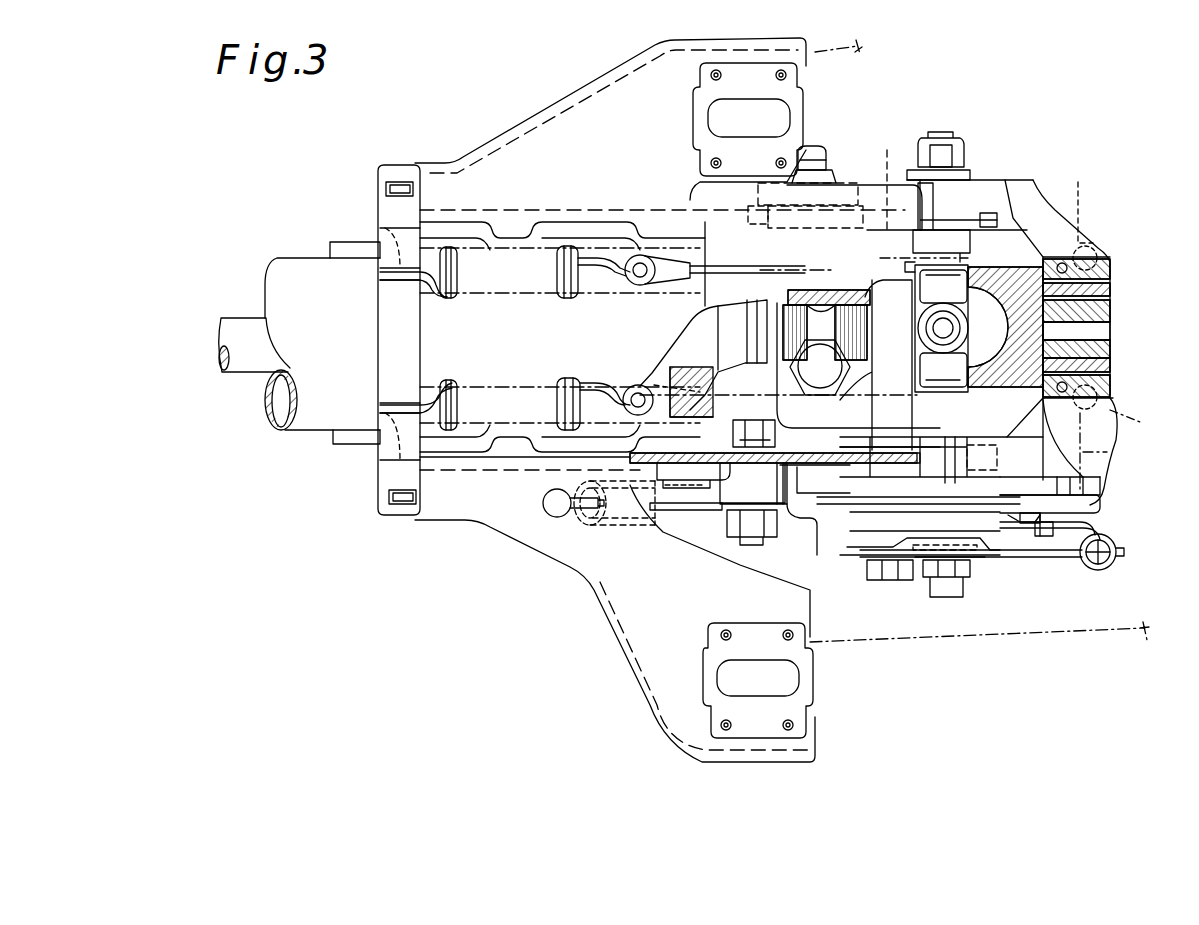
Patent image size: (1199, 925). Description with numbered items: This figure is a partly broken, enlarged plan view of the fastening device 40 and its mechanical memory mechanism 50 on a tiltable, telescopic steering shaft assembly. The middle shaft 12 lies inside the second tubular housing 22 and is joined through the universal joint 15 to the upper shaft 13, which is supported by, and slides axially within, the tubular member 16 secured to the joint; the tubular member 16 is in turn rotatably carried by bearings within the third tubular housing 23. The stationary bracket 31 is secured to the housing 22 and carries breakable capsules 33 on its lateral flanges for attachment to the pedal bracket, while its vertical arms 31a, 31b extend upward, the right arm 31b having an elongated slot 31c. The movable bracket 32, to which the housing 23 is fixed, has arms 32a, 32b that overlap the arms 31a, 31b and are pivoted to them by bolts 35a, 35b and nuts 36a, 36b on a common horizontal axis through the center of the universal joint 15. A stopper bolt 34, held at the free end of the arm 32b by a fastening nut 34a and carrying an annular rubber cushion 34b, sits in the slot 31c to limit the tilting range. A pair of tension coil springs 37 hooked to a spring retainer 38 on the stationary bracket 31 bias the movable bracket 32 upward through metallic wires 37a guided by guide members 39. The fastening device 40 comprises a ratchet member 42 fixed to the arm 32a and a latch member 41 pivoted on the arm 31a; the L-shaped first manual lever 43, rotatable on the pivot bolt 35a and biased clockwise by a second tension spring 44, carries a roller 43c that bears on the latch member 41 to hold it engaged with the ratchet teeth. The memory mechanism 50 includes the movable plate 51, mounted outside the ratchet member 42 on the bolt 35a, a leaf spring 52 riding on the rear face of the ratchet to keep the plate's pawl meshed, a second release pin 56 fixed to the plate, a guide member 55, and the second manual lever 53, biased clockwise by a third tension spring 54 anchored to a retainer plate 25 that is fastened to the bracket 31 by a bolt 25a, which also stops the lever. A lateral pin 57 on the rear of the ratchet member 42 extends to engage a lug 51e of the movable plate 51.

The middle shaft 12 is at (232, 330).
The upper shaft 13 is at (1095, 347).
The universal joint 15 is at (950, 327).
The tubular member 16 is at (1100, 368).
The second tubular housing 22 is at (307, 413).
The third tubular housing 23 is at (1139, 424).
The retainer plate 25 is at (1058, 555).
The bolt 25a is at (890, 582).
The stationary bracket 31 is at (608, 580).
The left arm 31a is at (800, 450).
The right arm 31b is at (894, 184).
The elongated slot 31c is at (825, 228).
The movable bracket 32 is at (1030, 178).
The left arm 32a is at (985, 440).
The right vertical arm 32b is at (995, 185).
The breakable capsule 33 is at (752, 75).
The stopper bolt 34 is at (803, 152).
The fastening nut 34a is at (826, 165).
The annular rubber cushion 34b is at (785, 232).
The pivot bolt 35a is at (957, 582).
The pivot bolt 35b is at (942, 132).
The nut 36a is at (922, 573).
The nut 36b is at (958, 152).
The tension coil spring 37 is at (505, 235).
The metallic wire 37a is at (723, 265).
The spring retainer 38 is at (390, 477).
The guide member 39 is at (950, 258).
The fastening device 40 is at (833, 532).
The latch member 41 is at (785, 488).
The ratchet member 42 is at (950, 483).
The first manual lever 43 is at (866, 570).
The roller 43c is at (690, 492).
The second tension spring 44 is at (624, 515).
The mechanical memory mechanism 50 is at (1138, 550).
The movable plate 51 is at (1100, 502).
The lug 51e is at (1046, 516).
The leaf spring 52 is at (1100, 485).
The second manual lever 53 is at (1025, 524).
The third tension spring 54 is at (1112, 563).
The guide member 55 is at (698, 470).
The second release pin 56 is at (1042, 536).
The lateral pin 57 is at (1017, 537).